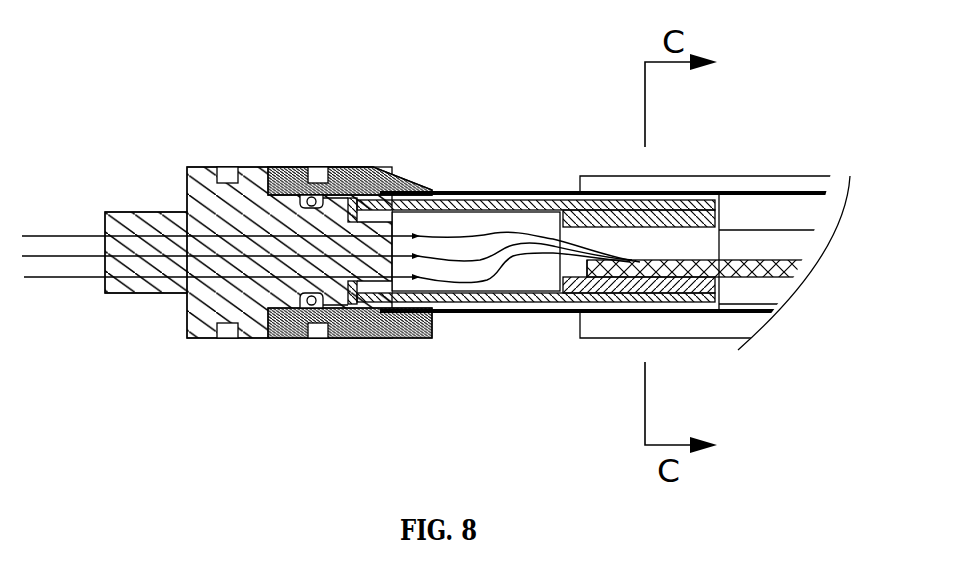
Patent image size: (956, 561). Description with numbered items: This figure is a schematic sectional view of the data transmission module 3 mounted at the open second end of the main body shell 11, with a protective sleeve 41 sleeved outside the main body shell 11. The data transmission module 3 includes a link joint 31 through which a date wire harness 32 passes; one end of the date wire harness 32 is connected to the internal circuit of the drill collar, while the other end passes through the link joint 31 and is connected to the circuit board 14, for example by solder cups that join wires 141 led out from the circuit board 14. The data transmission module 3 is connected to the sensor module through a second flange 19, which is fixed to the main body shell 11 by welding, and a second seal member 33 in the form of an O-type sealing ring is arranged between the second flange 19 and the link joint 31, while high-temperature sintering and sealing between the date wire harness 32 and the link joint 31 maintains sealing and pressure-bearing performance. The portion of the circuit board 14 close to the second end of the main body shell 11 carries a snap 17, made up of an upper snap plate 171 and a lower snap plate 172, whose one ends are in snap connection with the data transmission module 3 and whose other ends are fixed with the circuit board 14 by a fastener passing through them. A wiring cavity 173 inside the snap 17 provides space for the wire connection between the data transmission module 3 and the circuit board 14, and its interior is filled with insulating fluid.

The data transmission module 3 is at (232, 377).
The link joint 31 is at (210, 200).
The date wire harness 32 is at (68, 236).
The second flange 19 is at (295, 177).
The second seal member 33 is at (313, 196).
The main body shell 11 is at (455, 192).
The wires 141 is at (495, 233).
The wiring cavity 173 is at (532, 273).
The snap 17 is at (807, 82).
The upper snap plate 171 is at (680, 212).
The lower snap plate 172 is at (690, 290).
The circuit board 14 is at (800, 258).
The protective sleeve 41 is at (587, 184).